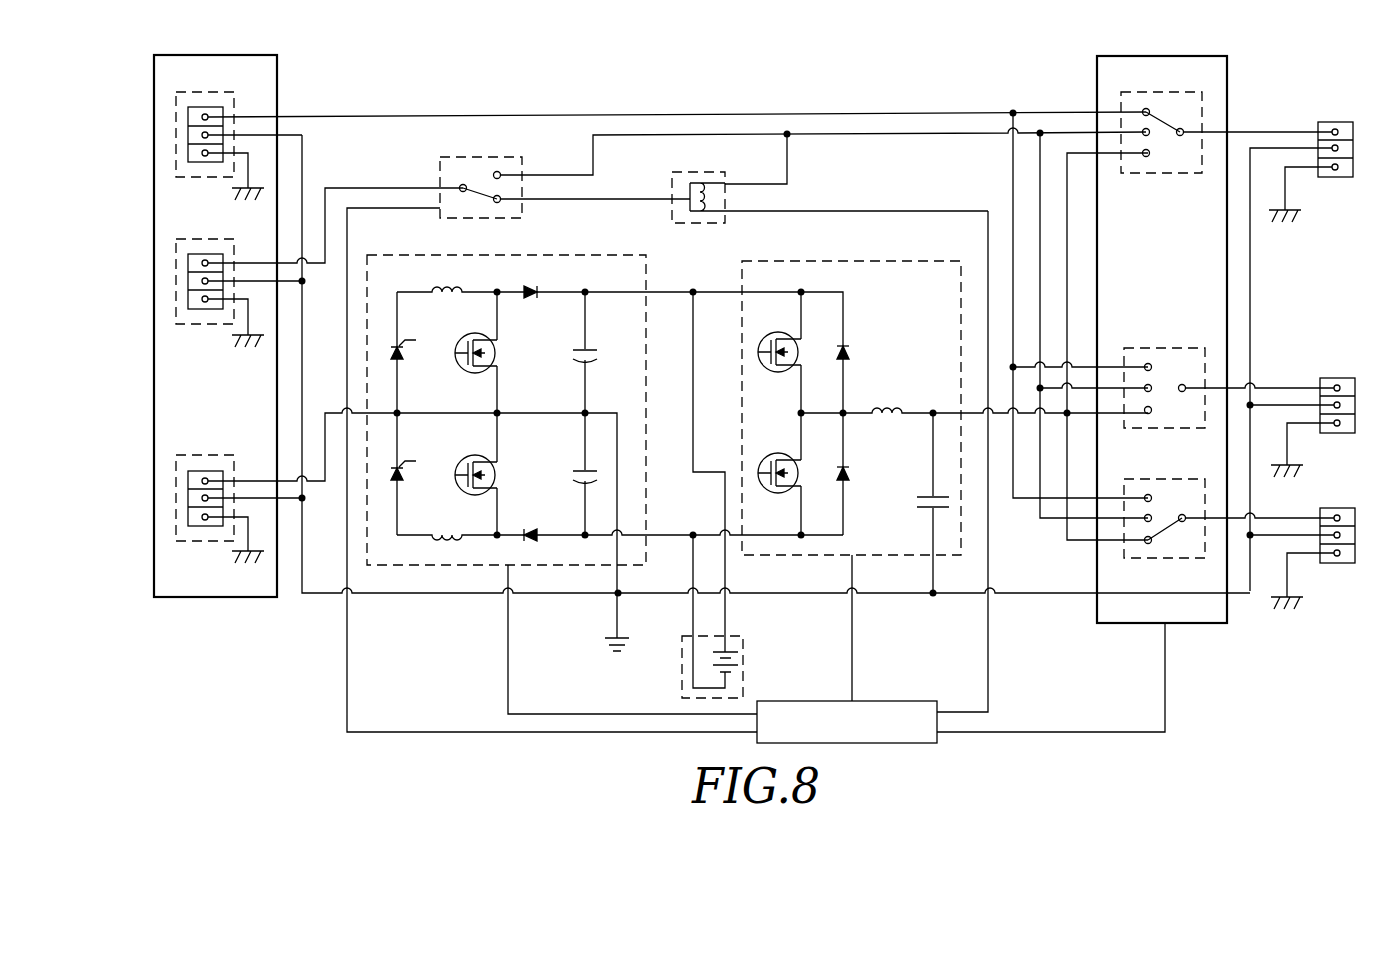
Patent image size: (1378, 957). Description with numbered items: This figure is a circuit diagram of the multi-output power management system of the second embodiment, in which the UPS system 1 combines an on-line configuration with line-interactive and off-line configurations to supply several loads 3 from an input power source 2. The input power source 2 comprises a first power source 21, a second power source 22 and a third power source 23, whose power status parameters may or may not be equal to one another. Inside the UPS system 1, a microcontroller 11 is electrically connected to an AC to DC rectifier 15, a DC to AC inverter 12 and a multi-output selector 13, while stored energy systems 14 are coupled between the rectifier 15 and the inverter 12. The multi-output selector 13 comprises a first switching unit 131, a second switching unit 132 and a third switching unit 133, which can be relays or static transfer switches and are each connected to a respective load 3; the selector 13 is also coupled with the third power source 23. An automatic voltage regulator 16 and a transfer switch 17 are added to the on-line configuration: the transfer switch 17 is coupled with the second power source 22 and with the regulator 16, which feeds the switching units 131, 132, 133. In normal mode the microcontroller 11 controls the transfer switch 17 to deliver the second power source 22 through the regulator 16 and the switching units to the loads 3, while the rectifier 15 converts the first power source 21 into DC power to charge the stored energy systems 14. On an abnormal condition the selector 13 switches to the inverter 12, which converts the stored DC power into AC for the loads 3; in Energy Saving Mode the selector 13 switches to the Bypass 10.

The UPS system 1 is at (735, 97).
The input power source 2 is at (212, 598).
The loads 3 is at (1337, 122).
The Bypass 10 is at (671, 115).
The microcontroller 11 is at (887, 700).
The DC to AC inverter 12 is at (905, 258).
The multi-output selector 13 is at (1160, 56).
The stored energy systems 14 is at (745, 636).
The AC to DC rectifier 15 is at (646, 258).
The automatic voltage regulator 16 is at (680, 172).
The transfer switch 17 is at (470, 157).
The first power source 21 is at (208, 456).
The second power source 22 is at (207, 328).
The third power source 23 is at (218, 92).
The first switching unit 131 is at (1132, 556).
The second switching unit 132 is at (1168, 347).
The third switching unit 133 is at (1152, 176).